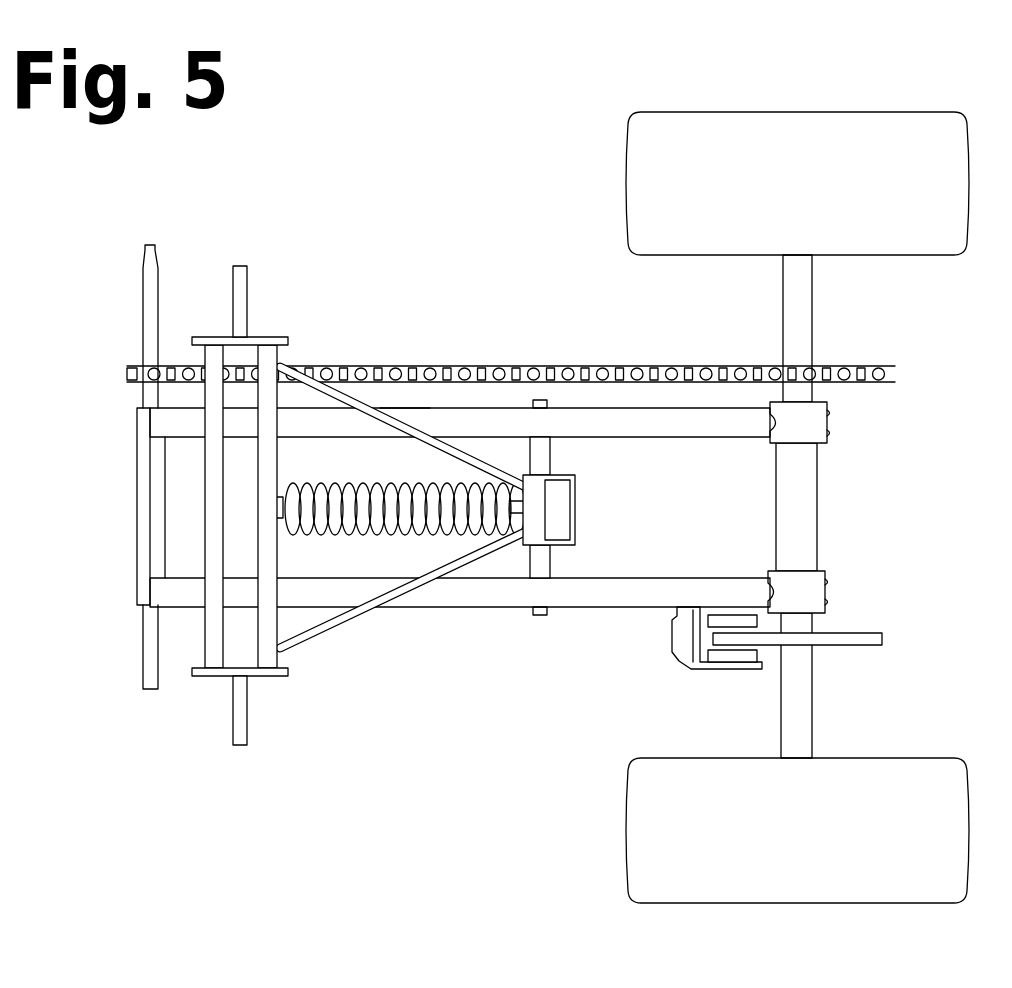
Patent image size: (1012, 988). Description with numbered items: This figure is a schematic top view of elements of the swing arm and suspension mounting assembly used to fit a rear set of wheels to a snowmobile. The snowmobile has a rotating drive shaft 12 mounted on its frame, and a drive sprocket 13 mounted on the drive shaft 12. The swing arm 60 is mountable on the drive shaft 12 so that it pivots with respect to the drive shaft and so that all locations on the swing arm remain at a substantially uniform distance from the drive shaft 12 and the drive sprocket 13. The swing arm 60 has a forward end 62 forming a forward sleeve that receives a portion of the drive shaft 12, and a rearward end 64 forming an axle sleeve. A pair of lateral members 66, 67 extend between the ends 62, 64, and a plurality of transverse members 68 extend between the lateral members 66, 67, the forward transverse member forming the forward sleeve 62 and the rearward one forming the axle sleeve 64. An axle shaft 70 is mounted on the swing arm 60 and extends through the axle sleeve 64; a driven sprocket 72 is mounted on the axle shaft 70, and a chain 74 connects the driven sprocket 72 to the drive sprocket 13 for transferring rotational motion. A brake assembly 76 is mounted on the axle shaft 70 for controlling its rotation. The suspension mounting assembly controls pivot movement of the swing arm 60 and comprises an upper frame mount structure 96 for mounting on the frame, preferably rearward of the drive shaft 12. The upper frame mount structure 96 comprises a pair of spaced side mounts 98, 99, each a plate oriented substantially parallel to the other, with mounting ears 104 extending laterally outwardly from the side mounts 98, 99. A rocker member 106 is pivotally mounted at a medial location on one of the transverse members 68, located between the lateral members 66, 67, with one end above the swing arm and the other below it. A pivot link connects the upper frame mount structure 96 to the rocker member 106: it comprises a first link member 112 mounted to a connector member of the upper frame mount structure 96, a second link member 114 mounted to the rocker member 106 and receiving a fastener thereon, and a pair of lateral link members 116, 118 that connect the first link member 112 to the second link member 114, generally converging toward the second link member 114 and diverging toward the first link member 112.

The drive shaft 12 is at (150, 310).
The drive sprocket 13 is at (138, 367).
The swing arm 60 is at (485, 627).
The forward end 62 is at (148, 466).
The rearward end 64 is at (801, 556).
The lateral member 66 is at (511, 598).
The lateral member 67 is at (572, 423).
The transverse member 68 is at (545, 558).
The axle shaft 70 is at (795, 694).
The driven sprocket 72 is at (850, 367).
The chain 74 is at (662, 367).
The brake assembly 76 is at (692, 698).
The upper frame mount structure 96 is at (325, 291).
The side mount 98 is at (258, 680).
The side mount 99 is at (253, 337).
The mounting ear 104 is at (240, 712).
The rocker member 106 is at (577, 505).
The first link member 112 is at (290, 365).
The second link member 114 is at (802, 475).
The lateral link member 116 is at (337, 620).
The lateral link member 118 is at (403, 412).